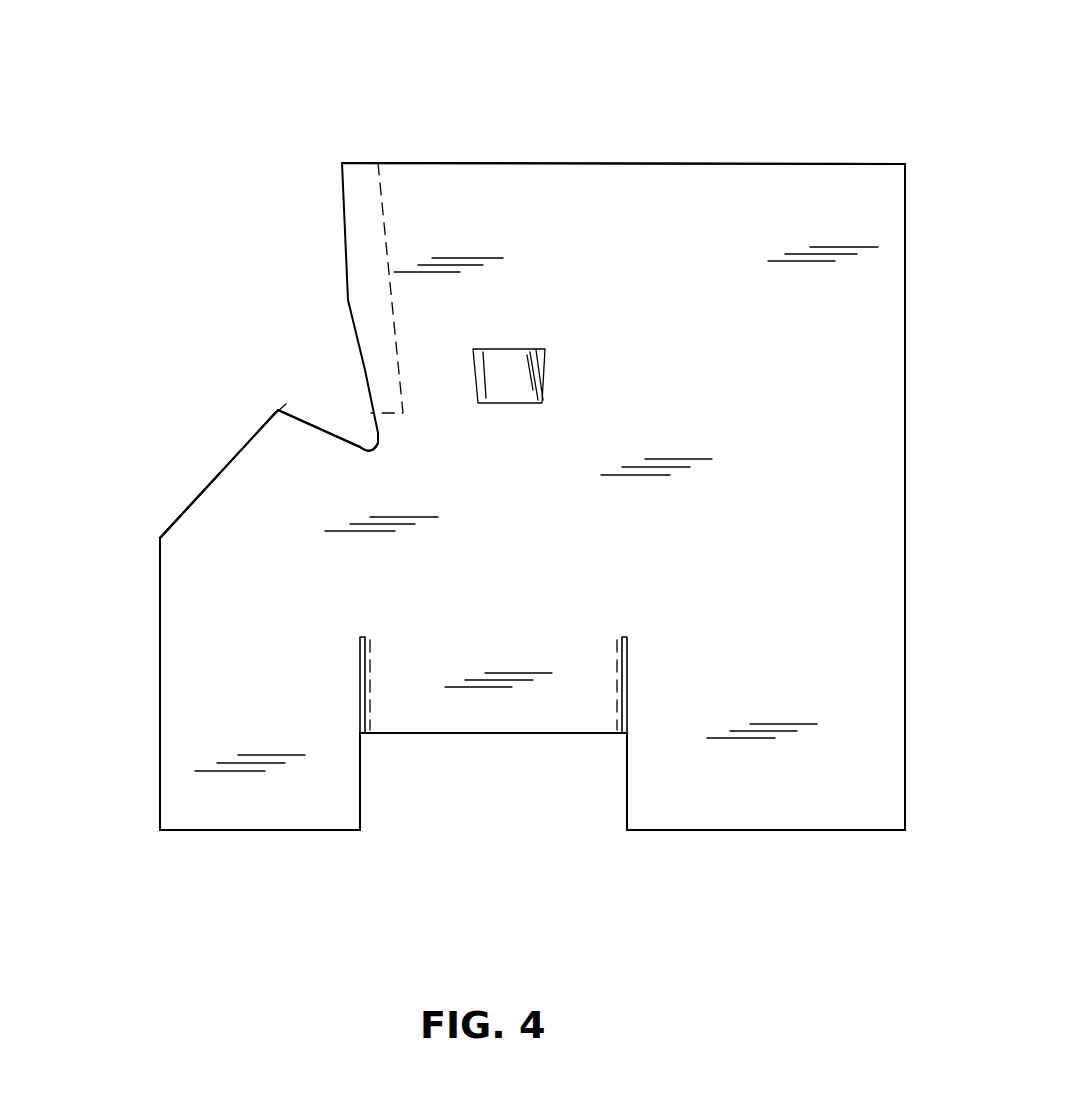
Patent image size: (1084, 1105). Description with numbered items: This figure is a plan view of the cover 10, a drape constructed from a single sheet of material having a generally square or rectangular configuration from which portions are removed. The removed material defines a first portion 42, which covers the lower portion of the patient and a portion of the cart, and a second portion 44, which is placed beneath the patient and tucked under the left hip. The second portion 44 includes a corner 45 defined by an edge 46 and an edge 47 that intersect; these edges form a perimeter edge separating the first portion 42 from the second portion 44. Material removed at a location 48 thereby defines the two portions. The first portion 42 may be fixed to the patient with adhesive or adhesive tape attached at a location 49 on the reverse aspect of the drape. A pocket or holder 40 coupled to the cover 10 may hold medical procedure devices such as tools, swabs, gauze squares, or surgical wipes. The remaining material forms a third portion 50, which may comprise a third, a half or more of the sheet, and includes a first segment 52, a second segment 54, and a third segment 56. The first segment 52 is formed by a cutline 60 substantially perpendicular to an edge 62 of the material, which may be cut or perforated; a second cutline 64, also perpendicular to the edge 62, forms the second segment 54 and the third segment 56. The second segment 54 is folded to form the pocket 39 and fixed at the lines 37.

The cover 10 is at (662, 88).
The lines 37 is at (617, 643).
The pocket 39 is at (565, 698).
The pocket or holder 40 is at (513, 368).
The first portion 42 is at (806, 190).
The second portion 44 is at (268, 485).
The corner 45 is at (277, 410).
The edge 46 is at (203, 490).
The edge 47 is at (307, 418).
The location 48 is at (363, 437).
The location 49 is at (355, 160).
The third portion 50 is at (275, 553).
The first segment 52 is at (180, 742).
The second segment 54 is at (473, 708).
The third segment 56 is at (836, 790).
The cutline 60 is at (358, 648).
The edge 62 is at (258, 830).
The second cutline 64 is at (630, 650).